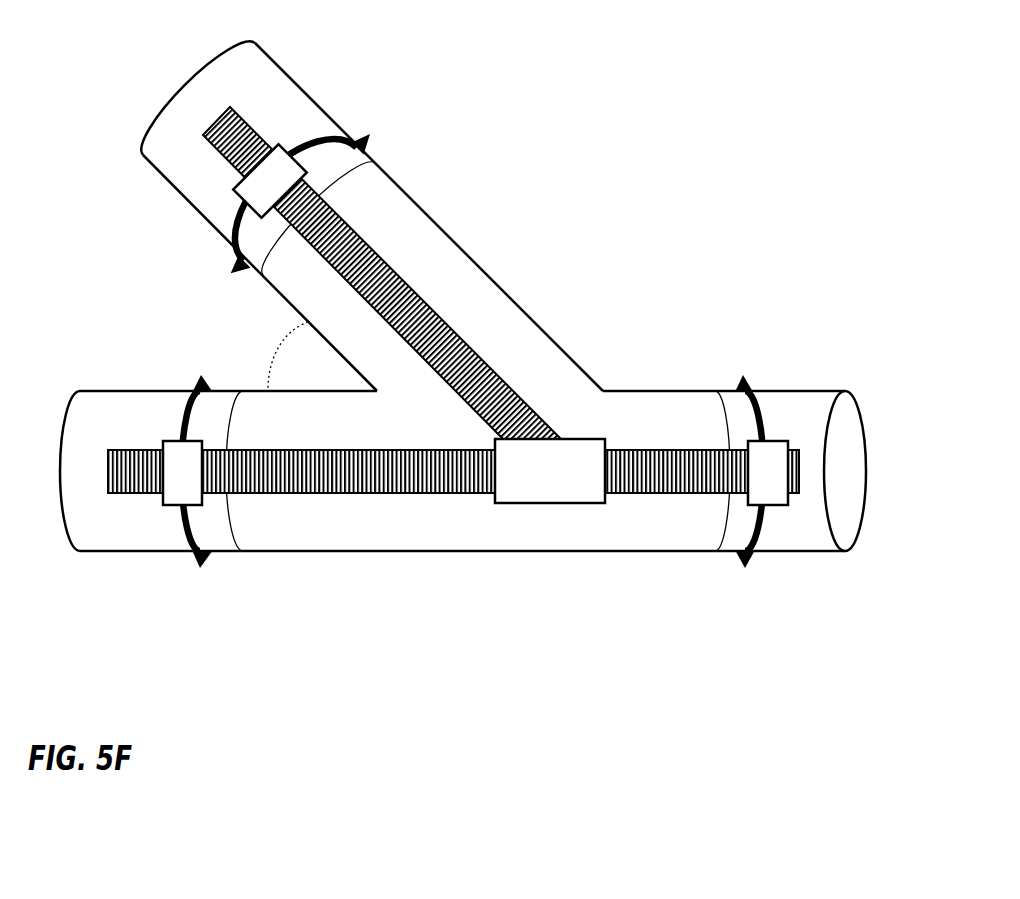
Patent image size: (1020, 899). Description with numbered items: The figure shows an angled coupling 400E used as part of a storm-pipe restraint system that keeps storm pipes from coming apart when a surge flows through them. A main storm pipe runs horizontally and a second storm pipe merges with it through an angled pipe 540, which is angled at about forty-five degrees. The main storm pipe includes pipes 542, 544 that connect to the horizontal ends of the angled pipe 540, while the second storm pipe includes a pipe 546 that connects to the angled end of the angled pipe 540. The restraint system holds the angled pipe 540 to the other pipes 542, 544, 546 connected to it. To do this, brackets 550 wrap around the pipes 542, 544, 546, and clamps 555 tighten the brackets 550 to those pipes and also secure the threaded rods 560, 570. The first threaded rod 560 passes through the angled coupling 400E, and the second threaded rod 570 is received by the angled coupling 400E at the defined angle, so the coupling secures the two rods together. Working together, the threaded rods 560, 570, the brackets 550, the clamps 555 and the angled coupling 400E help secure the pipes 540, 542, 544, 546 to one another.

The angled coupling 400E is at (553, 503).
The angled pipe 540 is at (455, 551).
The pipe 542 is at (60, 470).
The pipe 544 is at (865, 458).
The pipe 546 is at (182, 88).
The bracket 550 is at (375, 130).
The clamp 555 is at (275, 180).
The first threaded rod 560 is at (293, 493).
The second threaded rod 570 is at (455, 332).